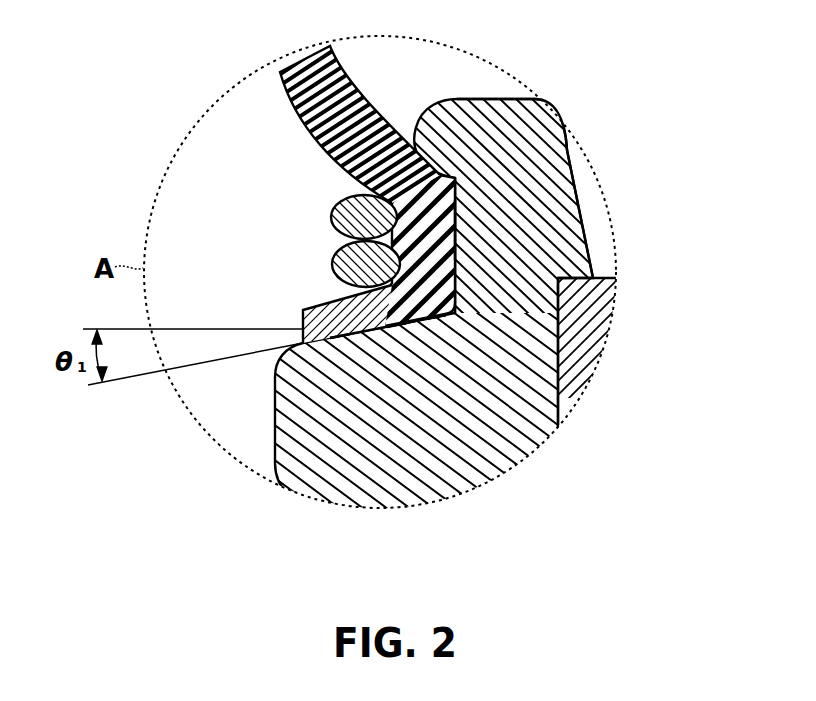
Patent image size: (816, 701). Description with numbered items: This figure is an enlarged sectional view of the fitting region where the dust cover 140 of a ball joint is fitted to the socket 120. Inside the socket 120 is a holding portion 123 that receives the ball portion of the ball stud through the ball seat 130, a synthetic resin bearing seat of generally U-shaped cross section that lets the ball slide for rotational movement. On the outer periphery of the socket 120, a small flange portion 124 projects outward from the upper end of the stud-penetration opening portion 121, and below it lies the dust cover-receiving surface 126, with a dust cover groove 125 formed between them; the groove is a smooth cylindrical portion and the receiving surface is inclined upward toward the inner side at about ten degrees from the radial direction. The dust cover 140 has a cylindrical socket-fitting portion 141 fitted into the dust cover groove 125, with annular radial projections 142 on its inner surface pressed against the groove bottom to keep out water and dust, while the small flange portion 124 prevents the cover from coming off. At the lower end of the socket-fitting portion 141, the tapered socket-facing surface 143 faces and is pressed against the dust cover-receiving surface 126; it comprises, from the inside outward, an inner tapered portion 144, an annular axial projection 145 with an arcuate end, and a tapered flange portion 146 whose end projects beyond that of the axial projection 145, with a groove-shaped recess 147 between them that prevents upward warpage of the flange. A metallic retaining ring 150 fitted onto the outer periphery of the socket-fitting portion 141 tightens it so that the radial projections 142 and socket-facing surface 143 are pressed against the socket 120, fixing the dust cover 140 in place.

The socket 120 is at (276, 426).
The stud-penetration opening portion 121 is at (567, 150).
The holding portion 123 is at (562, 393).
The small flange portion 124 is at (473, 99).
The dust cover groove 125 is at (455, 196).
The dust cover-receiving surface 126 is at (357, 297).
The ball seat 130 is at (607, 277).
The dust cover 140 is at (293, 105).
The socket-fitting portion 141 is at (455, 277).
The radial projections 142 is at (455, 237).
The socket-facing surface 143 is at (503, 562).
The inner tapered portion 144 is at (436, 318).
The axial projection 145 is at (405, 323).
The tapered flange portion 146 is at (340, 336).
The recess 147 is at (397, 325).
The retaining ring 150 is at (332, 216).